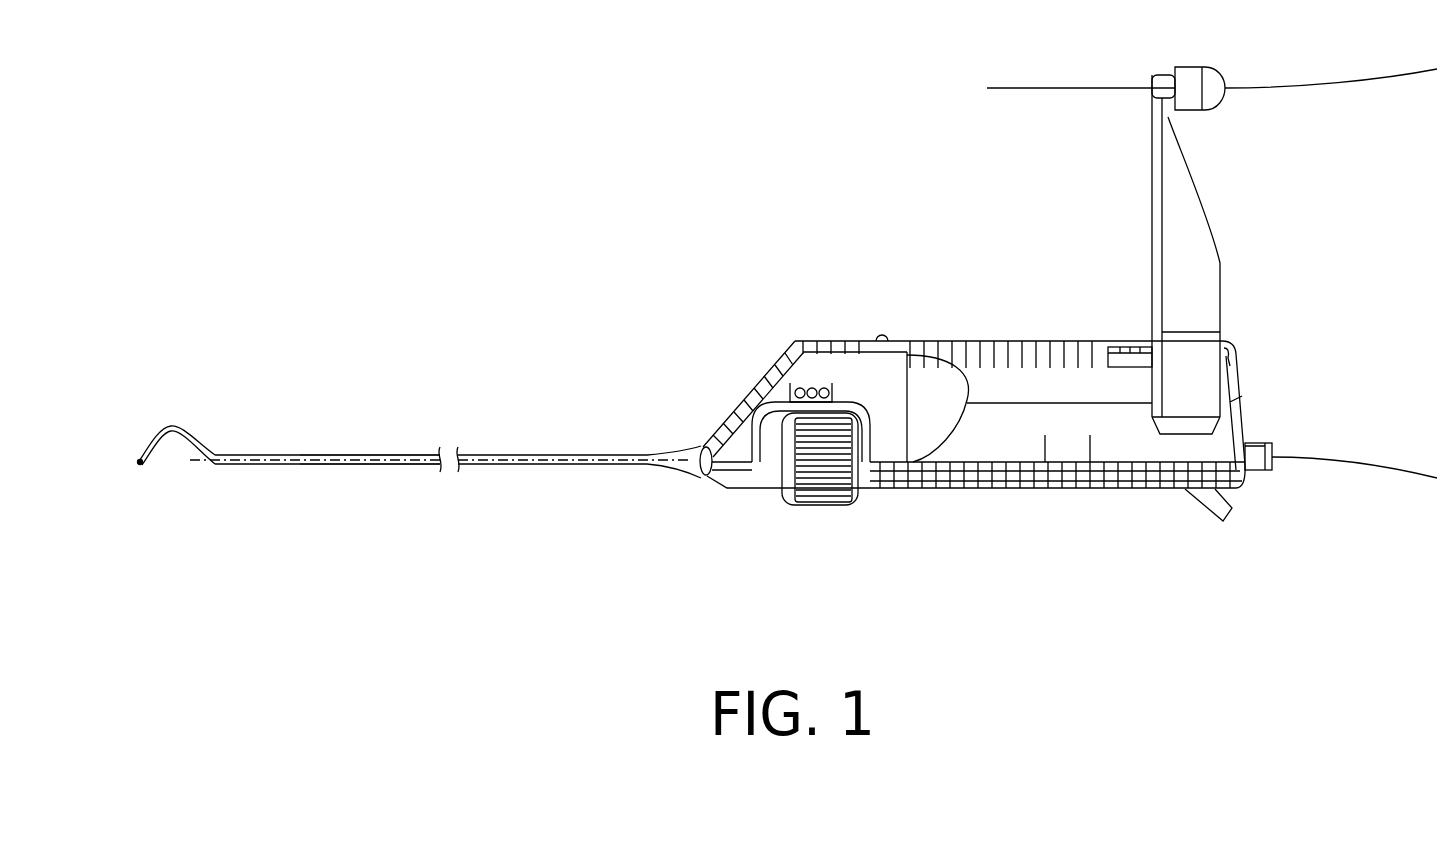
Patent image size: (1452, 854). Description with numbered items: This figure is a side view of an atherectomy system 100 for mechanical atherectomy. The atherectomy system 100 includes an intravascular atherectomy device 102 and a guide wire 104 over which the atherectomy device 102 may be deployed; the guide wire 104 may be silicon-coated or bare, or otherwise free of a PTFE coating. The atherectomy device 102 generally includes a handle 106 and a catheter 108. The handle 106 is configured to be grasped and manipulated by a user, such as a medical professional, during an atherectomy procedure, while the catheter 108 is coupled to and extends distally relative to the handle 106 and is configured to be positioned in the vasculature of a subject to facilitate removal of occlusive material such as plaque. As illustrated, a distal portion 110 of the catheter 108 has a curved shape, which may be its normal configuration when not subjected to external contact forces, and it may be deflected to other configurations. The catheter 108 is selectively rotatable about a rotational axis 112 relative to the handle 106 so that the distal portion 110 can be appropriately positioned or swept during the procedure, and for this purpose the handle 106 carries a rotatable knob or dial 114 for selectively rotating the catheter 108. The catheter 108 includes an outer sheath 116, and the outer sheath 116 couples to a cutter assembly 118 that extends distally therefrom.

The atherectomy system 100 is at (590, 190).
The atherectomy device 102 is at (791, 348).
The guide wire 104 is at (1362, 468).
The handle 106 is at (1002, 341).
The catheter 108 is at (283, 454).
The distal portion 110 is at (170, 430).
The rotational axis 112 is at (298, 465).
The rotatable knob or dial 114 is at (784, 489).
The outer sheath 116 is at (368, 454).
The cutter assembly 118 is at (140, 462).